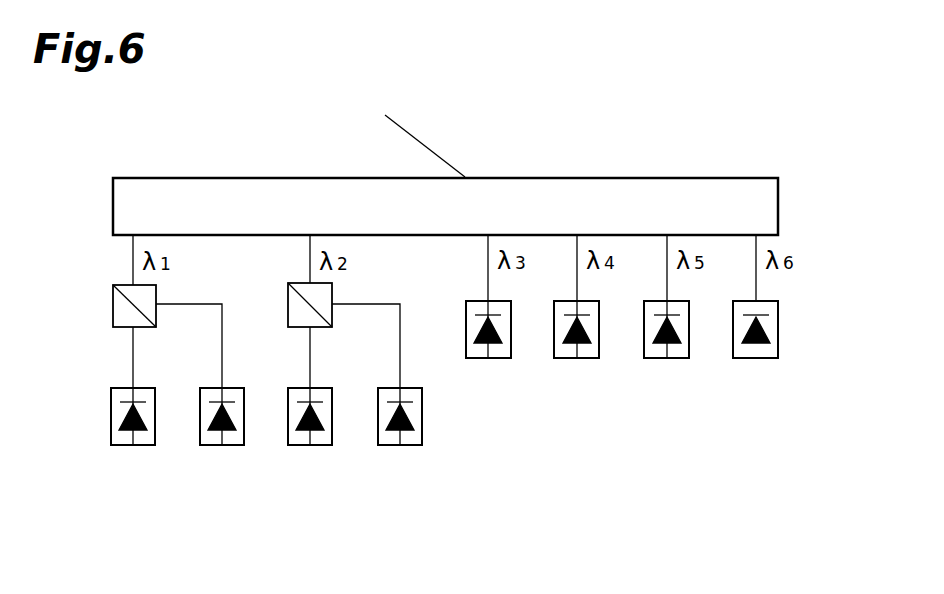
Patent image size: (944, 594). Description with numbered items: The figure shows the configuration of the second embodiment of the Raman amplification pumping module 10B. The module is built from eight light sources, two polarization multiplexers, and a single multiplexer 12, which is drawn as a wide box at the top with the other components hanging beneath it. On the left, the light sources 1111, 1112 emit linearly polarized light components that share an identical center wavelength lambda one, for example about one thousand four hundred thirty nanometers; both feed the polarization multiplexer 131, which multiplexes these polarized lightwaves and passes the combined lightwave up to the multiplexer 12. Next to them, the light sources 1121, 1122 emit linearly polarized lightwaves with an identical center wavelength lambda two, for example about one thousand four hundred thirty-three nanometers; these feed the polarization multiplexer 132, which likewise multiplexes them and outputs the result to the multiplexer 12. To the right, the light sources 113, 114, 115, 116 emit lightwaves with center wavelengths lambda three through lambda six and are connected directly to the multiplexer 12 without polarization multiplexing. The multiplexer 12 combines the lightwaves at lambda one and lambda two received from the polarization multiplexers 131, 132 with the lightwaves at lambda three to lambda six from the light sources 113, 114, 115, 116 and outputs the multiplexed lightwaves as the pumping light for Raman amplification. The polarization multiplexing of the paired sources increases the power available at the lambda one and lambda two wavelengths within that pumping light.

The Raman amplification pumping module 10B is at (487, 97).
The multiplexer 12 is at (779, 205).
The polarization multiplexer 131 is at (112, 308).
The polarization multiplexer 132 is at (288, 308).
The light source 1111 is at (128, 447).
The light source 1112 is at (217, 447).
The light source 1121 is at (305, 447).
The light source 1122 is at (395, 447).
The light source 113 is at (483, 360).
The light source 114 is at (572, 360).
The light source 115 is at (661, 360).
The light source 116 is at (750, 360).